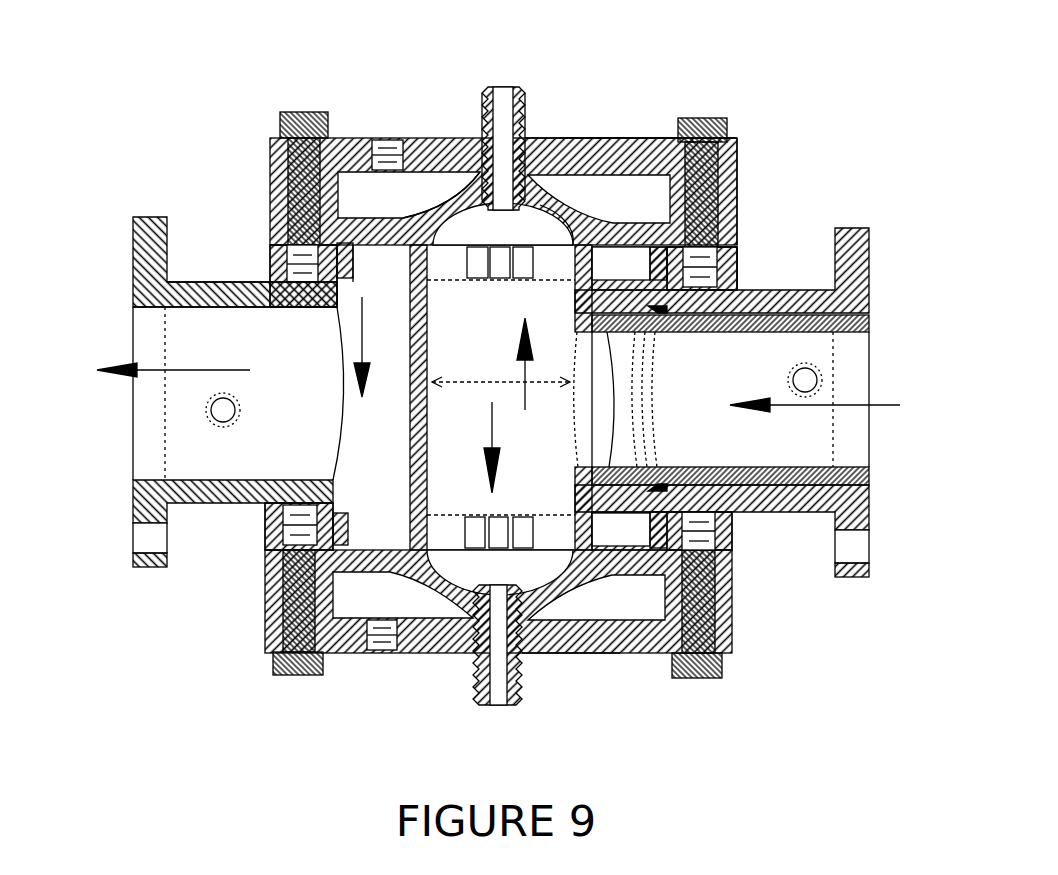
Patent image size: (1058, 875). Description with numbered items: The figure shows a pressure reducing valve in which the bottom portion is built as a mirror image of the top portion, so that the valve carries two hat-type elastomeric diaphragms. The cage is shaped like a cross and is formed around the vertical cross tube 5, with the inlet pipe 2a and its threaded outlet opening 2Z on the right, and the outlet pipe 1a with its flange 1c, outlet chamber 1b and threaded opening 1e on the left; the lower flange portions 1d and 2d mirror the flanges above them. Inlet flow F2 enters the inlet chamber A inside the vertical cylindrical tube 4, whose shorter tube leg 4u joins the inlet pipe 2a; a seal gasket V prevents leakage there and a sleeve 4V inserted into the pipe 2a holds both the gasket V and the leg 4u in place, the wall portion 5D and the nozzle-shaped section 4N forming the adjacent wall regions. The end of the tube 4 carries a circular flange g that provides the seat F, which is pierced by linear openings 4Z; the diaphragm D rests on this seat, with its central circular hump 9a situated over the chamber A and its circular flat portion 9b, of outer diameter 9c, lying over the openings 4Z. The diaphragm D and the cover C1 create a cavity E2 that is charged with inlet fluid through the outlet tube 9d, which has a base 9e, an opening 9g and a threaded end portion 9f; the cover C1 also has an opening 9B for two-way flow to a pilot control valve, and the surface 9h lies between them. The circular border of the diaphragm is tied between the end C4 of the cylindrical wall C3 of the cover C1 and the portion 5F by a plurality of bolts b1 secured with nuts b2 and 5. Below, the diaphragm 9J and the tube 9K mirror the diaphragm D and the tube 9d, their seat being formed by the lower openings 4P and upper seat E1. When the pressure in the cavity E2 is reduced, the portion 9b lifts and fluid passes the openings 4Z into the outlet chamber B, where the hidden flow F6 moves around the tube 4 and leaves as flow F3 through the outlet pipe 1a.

The opening 9B is at (385, 140).
The housing top surface 9h is at (590, 150).
The cavity E2 is at (635, 150).
The cover C1 is at (545, 150).
The circular flat portion 9b is at (397, 218).
The central circular hump 9a is at (470, 182).
The diaphragm D is at (392, 152).
The diaphragm 9J is at (385, 650).
The base 9e is at (500, 399).
The seat F is at (575, 268).
The opening 9g is at (505, 100).
The threaded end portion 9f is at (490, 105).
The outlet tube 9d is at (520, 100).
The tube 9K is at (522, 695).
The sleeve block b2 is at (300, 295).
The vertical cross tube 5 is at (285, 530).
The cylindrical wall C3 is at (275, 170).
The end C4 is at (737, 180).
The outer diameter 9c is at (290, 205).
The bolts b1 is at (298, 112).
The flange portion of tube 5 5F is at (290, 262).
The flange 1c is at (133, 258).
The outlet pipe 1a is at (185, 300).
The left pipe lower flange 1d is at (140, 552).
The outlet chamber 1b is at (175, 390).
The threaded opening 1e is at (225, 422).
The nozzle 4N is at (346, 400).
The right pipe wall 5D is at (700, 318).
The sleeve 4V is at (720, 332).
The inlet pipe 2a is at (760, 485).
The right pipe lower flange 2d is at (868, 555).
The threaded outlet opening 2Z is at (815, 372).
The seal gasket V is at (645, 315).
The tube leg 4u is at (637, 335).
The vertical cylindrical tube 4 is at (422, 320).
The circular flange g is at (370, 262).
The upper seat E1 is at (479, 266).
The linear openings 4Z is at (493, 278).
The lower seat 4P is at (427, 405).
The outlet chamber B is at (376, 347).
The inlet chamber A is at (501, 407).
The hidden flow F6 is at (524, 408).
The flow F3 is at (148, 369).
The inlet flow F2 is at (836, 404).